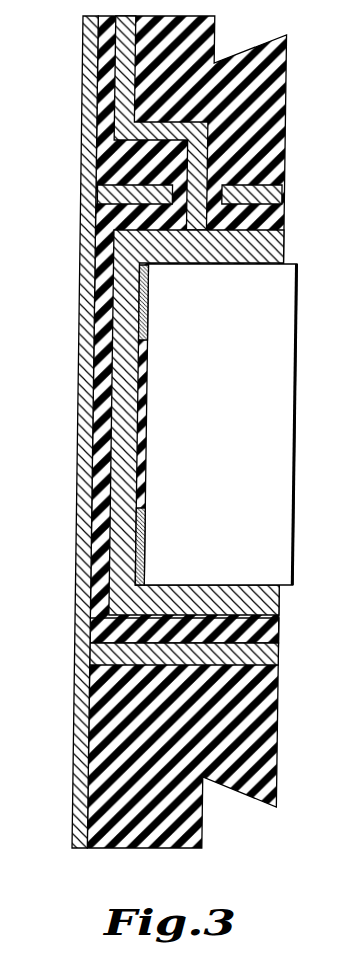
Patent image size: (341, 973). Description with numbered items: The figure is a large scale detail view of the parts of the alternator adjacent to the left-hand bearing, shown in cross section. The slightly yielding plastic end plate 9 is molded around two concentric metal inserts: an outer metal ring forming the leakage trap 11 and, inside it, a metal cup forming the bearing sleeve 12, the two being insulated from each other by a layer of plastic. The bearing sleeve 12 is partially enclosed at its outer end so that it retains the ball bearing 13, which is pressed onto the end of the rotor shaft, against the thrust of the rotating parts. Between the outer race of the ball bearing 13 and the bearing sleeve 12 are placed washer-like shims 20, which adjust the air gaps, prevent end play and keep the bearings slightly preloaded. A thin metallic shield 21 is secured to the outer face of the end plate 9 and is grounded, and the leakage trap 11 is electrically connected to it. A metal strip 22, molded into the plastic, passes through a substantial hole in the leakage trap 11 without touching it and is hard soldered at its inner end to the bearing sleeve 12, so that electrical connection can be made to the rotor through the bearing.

The end plate 9 is at (193, 800).
The leakage trap 11 is at (124, 191).
The bearing sleeve 12 is at (170, 590).
The ball bearing 13 is at (220, 424).
The shim 20 is at (152, 290).
The metallic shield 21 is at (86, 720).
The metal strip 22 is at (118, 89).